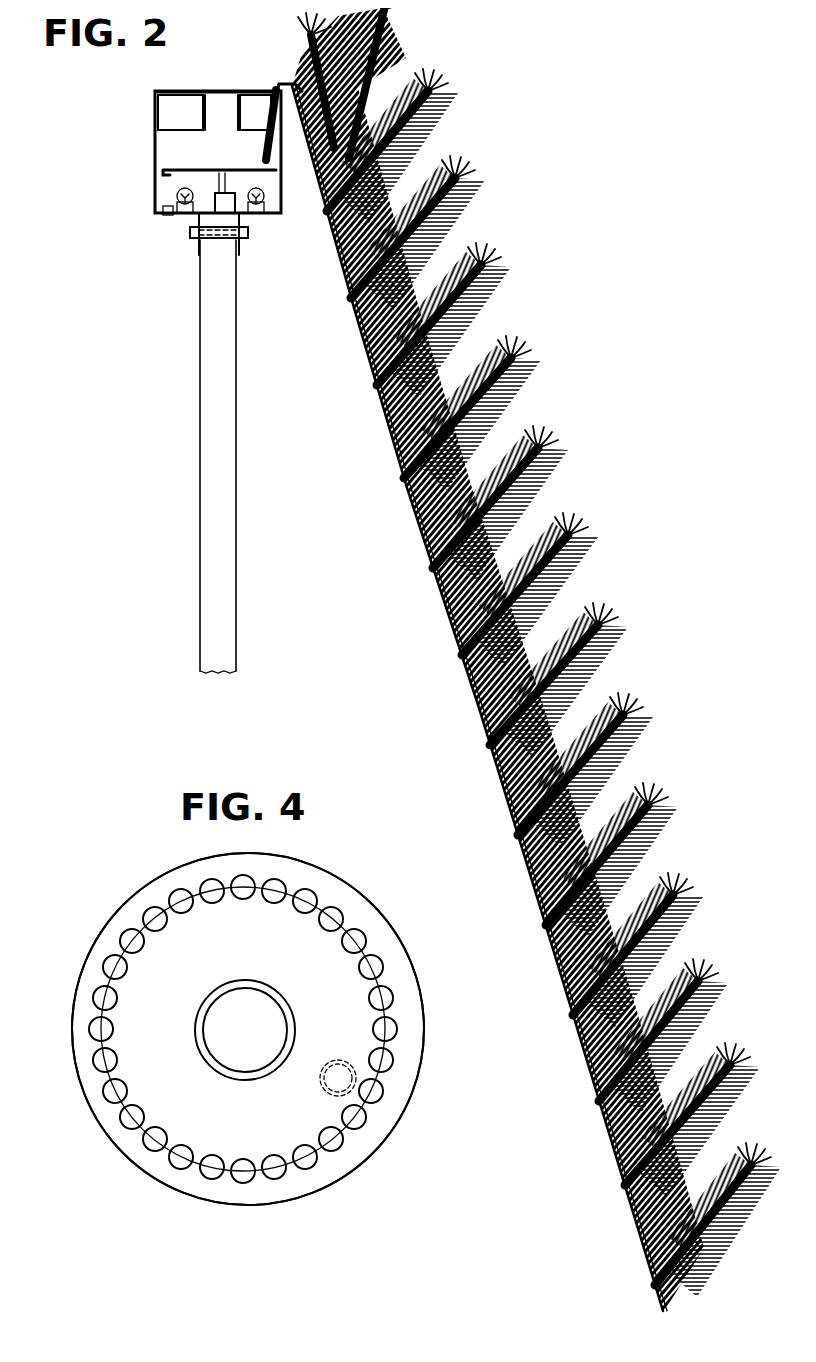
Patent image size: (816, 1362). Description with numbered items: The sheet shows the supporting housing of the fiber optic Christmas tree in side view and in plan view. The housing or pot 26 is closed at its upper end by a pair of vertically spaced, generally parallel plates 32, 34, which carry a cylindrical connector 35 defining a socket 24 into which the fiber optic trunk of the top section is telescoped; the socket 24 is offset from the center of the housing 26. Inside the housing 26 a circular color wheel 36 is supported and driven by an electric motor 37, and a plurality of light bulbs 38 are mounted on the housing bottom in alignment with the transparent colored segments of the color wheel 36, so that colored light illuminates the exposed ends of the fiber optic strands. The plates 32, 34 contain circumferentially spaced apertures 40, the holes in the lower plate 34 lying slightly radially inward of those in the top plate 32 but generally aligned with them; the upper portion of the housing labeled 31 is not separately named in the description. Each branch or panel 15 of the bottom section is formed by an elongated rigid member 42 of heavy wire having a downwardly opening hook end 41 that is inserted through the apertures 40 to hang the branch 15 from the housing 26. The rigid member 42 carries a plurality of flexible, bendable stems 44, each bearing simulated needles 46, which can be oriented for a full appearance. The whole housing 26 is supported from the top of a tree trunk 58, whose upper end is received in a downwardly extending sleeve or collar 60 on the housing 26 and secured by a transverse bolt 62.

In FIG. 2, the branches or panels 15 is at (420, 593).
In FIG. 4, the socket 24 is at (210, 1050).
In FIG. 2, the housing or pot 26 is at (128, 156).
In FIG. 4, the housing or pot 26 is at (124, 876).
In FIG. 2, the housing top 31 is at (177, 83).
In FIG. 4, the top plate 32 is at (323, 973).
In FIG. 2, the lower plate 34 is at (173, 127).
In FIG. 2, the cylindrical connector 35 is at (195, 102).
In FIG. 4, the cylindrical connector 35 is at (275, 1050).
In FIG. 2, the color wheel 36 is at (153, 165).
In FIG. 2, the electric motor 37 is at (192, 208).
In FIG. 2, the light bulbs 38 is at (257, 203).
In FIG. 4, the apertures 40 is at (277, 880).
In FIG. 2, the hook end 41 is at (262, 125).
In FIG. 2, the rigid member 42 is at (467, 680).
In FIG. 2, the stems 44 is at (550, 600).
In FIG. 2, the simulated needles 46 is at (563, 560).
In FIG. 2, the tree trunk 58 is at (210, 533).
In FIG. 2, the sleeve or collar 60 is at (192, 243).
In FIG. 2, the transverse bolt 62 is at (240, 231).